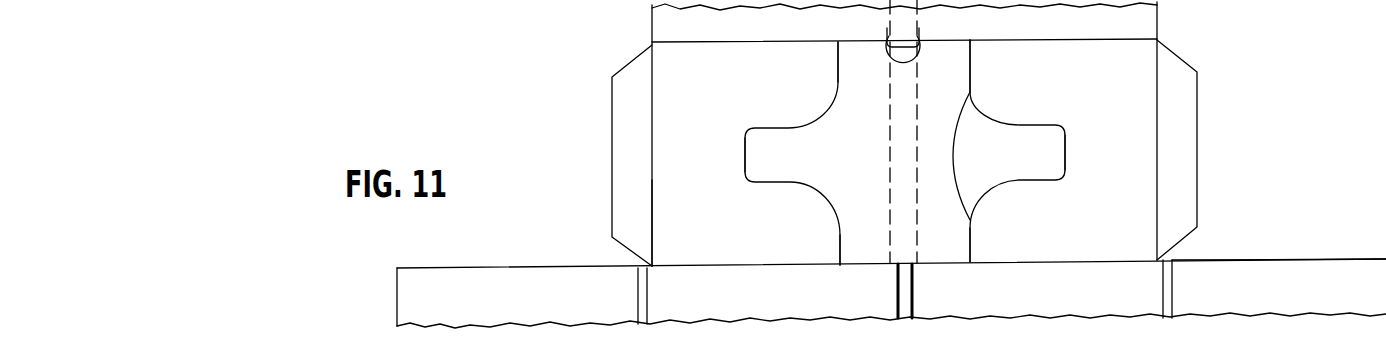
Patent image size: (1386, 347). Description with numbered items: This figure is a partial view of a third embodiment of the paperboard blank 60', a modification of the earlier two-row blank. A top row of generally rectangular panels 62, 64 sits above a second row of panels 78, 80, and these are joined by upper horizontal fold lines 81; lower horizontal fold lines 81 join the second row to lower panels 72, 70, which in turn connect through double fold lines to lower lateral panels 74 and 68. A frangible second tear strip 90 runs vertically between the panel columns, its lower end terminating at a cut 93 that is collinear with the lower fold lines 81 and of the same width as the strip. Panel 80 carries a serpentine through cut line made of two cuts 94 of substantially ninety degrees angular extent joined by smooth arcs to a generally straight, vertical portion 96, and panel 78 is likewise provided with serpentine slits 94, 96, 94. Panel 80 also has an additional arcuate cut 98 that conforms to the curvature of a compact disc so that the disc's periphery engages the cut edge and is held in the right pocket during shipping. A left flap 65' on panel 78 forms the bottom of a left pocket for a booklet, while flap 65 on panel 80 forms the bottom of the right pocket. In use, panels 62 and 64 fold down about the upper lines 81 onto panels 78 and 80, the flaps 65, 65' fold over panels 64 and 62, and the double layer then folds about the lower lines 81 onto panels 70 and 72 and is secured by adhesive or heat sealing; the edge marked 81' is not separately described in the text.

The blank 60' is at (1341, 52).
The panel 62 is at (672, 22).
The panel 64 is at (1135, 20).
The flap 65 is at (1214, 150).
The left flap 65' is at (604, 155).
The lower lateral panel 68 is at (1271, 299).
The panel 70 is at (1055, 300).
The panel 72 is at (793, 304).
The lower lateral panel 74 is at (528, 284).
The panel 78 is at (715, 115).
The panel 80 is at (1110, 165).
The fold lines 81 is at (904, 134).
The plate edge 81' is at (678, 222).
The second tear strip 90 is at (907, 188).
The cut 93 is at (907, 262).
The cuts 94 is at (838, 82).
The cut portion 96 is at (746, 152).
The arcuate cut 98 is at (963, 160).